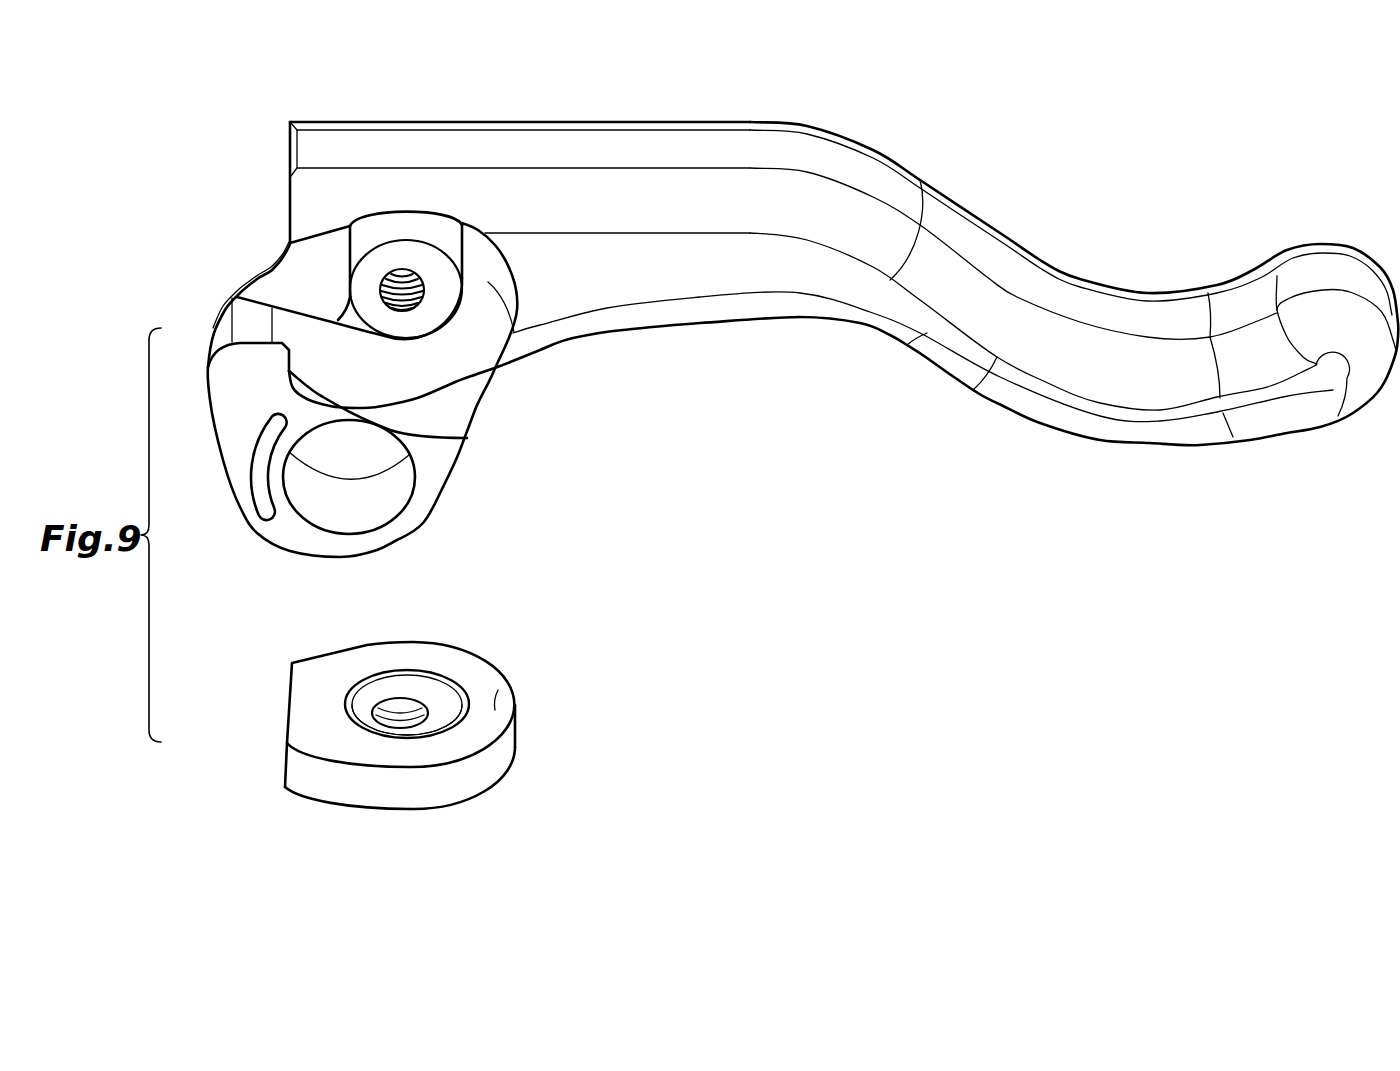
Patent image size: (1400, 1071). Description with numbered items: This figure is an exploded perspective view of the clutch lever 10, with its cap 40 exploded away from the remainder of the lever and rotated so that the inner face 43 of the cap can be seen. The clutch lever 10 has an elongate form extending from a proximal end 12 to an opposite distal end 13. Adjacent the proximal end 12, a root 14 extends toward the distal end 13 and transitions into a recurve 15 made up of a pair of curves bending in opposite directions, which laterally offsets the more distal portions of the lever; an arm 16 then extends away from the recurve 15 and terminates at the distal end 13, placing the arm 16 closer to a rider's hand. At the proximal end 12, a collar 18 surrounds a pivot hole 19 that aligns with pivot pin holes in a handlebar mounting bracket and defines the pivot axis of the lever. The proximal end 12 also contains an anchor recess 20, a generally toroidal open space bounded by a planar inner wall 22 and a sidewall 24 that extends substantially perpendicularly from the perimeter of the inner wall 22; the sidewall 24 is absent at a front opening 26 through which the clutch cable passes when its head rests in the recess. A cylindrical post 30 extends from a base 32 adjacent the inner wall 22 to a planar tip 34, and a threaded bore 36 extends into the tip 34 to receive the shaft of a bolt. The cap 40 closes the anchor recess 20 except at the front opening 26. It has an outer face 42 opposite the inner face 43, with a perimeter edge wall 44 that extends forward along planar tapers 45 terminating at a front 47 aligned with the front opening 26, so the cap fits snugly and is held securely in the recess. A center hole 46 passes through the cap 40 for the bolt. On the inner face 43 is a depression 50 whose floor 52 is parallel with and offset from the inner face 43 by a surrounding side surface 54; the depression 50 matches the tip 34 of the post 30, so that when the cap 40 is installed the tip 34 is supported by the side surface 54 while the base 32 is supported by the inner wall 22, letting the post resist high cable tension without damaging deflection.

The clutch lever 10 is at (667, 384).
The proximal end 12 is at (233, 393).
The distal end 13 is at (1340, 323).
The root 14 is at (570, 195).
The recurve 15 is at (977, 280).
The arm 16 is at (1148, 352).
The collar 18 is at (397, 533).
The pivot hole 19 is at (333, 474).
The anchor recess 20 is at (467, 350).
The inner wall 22 is at (515, 345).
The sidewall 24 is at (423, 392).
The front opening 26 is at (274, 291).
The post 30 is at (417, 230).
The base 32 is at (353, 238).
The tip 34 is at (365, 270).
The bore 36 is at (373, 302).
The cap 40 is at (528, 755).
The outer face 42 is at (463, 797).
The inner face 43 is at (495, 708).
The edge wall 44 is at (492, 773).
The tapers 45 is at (332, 782).
The center hole 46 is at (397, 718).
The front 47 is at (287, 722).
The depression 50 is at (433, 697).
The floor 52 is at (453, 702).
The side surface 54 is at (370, 683).